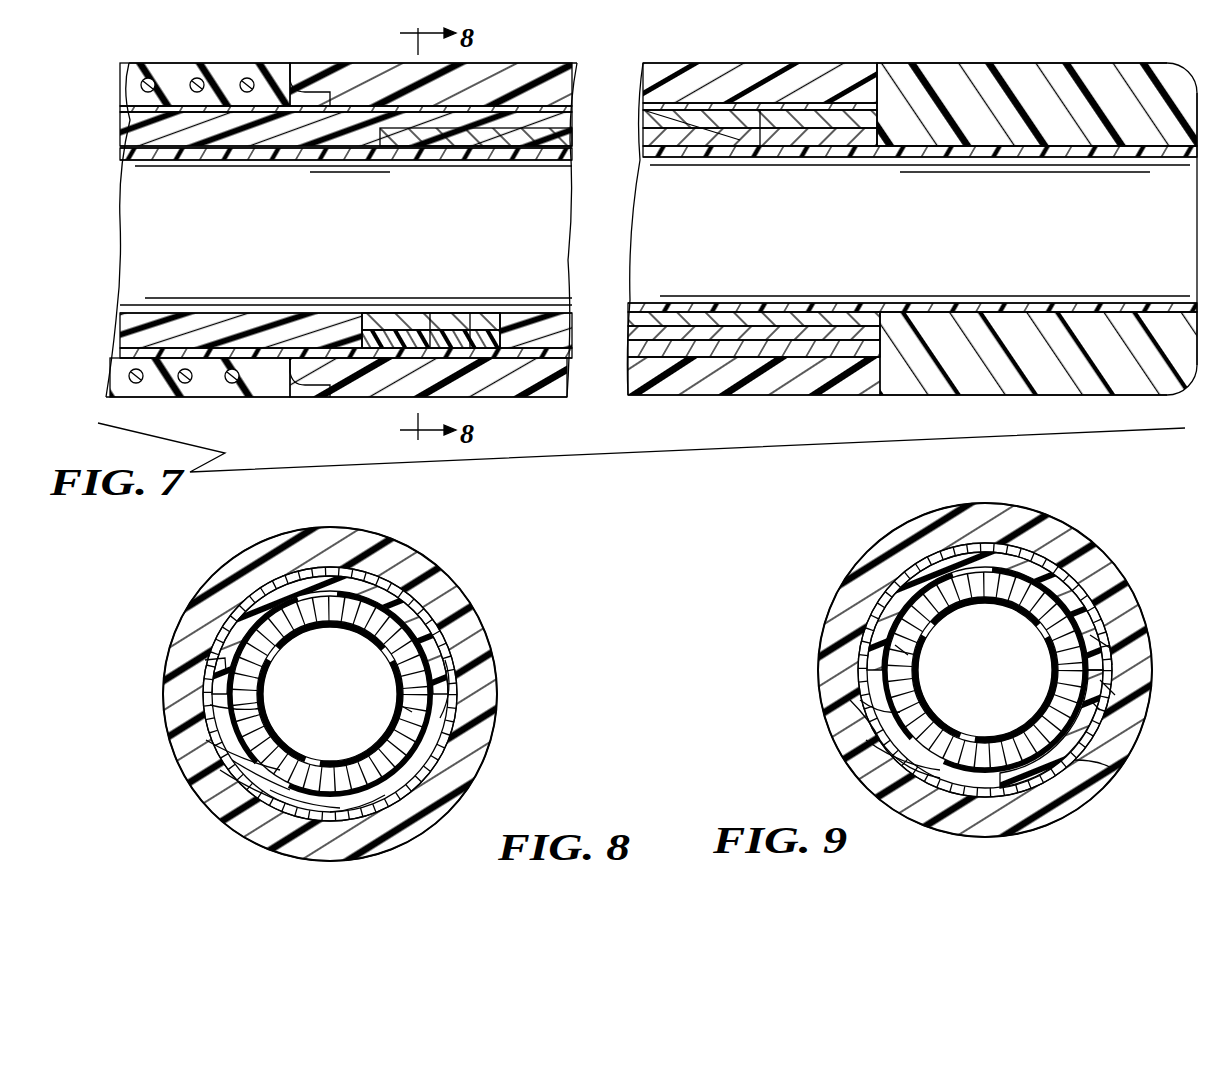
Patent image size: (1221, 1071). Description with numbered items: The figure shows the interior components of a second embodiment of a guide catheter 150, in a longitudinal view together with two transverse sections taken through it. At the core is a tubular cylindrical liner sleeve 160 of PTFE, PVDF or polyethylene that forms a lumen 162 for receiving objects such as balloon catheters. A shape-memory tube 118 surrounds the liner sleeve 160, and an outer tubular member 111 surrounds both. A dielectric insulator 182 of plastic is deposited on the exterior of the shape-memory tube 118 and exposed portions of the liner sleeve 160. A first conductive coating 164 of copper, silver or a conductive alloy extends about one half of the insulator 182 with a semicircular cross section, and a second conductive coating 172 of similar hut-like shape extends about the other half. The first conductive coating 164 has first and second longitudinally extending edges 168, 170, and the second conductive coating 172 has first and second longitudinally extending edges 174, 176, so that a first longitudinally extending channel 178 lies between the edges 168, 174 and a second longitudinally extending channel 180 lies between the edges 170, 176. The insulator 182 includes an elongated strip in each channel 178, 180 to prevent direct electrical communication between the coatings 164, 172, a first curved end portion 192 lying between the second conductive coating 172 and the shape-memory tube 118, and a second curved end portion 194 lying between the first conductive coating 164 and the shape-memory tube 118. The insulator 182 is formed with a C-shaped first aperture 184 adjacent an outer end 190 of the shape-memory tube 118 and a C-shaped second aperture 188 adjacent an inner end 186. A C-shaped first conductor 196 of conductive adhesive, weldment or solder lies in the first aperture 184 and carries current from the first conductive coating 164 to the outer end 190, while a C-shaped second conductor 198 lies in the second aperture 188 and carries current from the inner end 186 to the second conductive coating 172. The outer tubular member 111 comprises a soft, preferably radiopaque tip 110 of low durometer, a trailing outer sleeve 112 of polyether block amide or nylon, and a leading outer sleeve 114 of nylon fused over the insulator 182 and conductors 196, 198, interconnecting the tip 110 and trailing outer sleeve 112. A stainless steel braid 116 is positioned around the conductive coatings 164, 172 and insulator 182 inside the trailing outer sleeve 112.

In FIG. 7, the soft tip 110 is at (1125, 72).
In FIG. 7, the tubular member 111 is at (1022, 62).
In FIG. 8, the tubular member 111 is at (498, 748).
In FIG. 9, the tubular member 111 is at (824, 612).
In FIG. 7, the trailing outer sleeve 112 is at (243, 70).
In FIG. 7, the leading outer sleeve 114 is at (539, 72).
In FIG. 7, the stainless steel braid 116 is at (197, 78).
In FIG. 7, the shape-memory tube 118 is at (775, 118).
In FIG. 8, the shape-memory tube 118 is at (422, 642).
In FIG. 9, the shape-memory tube 118 is at (1082, 580).
In FIG. 7, the guide catheter 150 is at (892, 63).
In FIG. 8, the guide catheter 150 is at (495, 768).
In FIG. 9, the guide catheter 150 is at (822, 663).
In FIG. 7, the liner sleeve 160 is at (1011, 300).
In FIG. 8, the liner sleeve 160 is at (330, 694).
In FIG. 9, the liner sleeve 160 is at (1040, 720).
In FIG. 8, the lumen 162 is at (278, 656).
In FIG. 9, the lumen 162 is at (968, 602).
In FIG. 7, the first conductive coating 164 is at (355, 105).
In FIG. 8, the first conductive coating 164 is at (245, 605).
In FIG. 9, the first conductive coating 164 is at (1080, 588).
In FIG. 8, the first longitudinally extending edge 168 is at (208, 663).
In FIG. 9, the first longitudinally extending edge 168 is at (908, 652).
In FIG. 8, the second longitudinally extending edge 170 is at (480, 670).
In FIG. 9, the second longitudinally extending edge 170 is at (1112, 648).
In FIG. 7, the second conductive coating 172 is at (354, 358).
In FIG. 8, the second conductive coating 172 is at (362, 810).
In FIG. 9, the second conductive coating 172 is at (1110, 768).
In FIG. 8, the first longitudinally extending edge 174 is at (260, 710).
In FIG. 9, the first longitudinally extending edge 174 is at (867, 710).
In FIG. 8, the second longitudinally extending edge 176 is at (405, 700).
In FIG. 9, the second longitudinally extending edge 176 is at (1092, 703).
In FIG. 9, the first longitudinally extending channel 178 is at (858, 722).
In FIG. 9, the second longitudinally extending channel 180 is at (1117, 692).
In FIG. 7, the insulator 182 is at (244, 128).
In FIG. 8, the insulator 182 is at (392, 598).
In FIG. 9, the insulator 182 is at (1075, 735).
In FIG. 7, the first aperture 184 is at (740, 118).
In FIG. 7, the inner end 186 is at (412, 318).
In FIG. 7, the second aperture 188 is at (482, 340).
In FIG. 7, the outer end 190 is at (858, 128).
In FIG. 7, the first curved end portion 192 is at (836, 330).
In FIG. 9, the first curved end portion 192 is at (913, 753).
In FIG. 7, the second curved end portion 194 is at (468, 118).
In FIG. 8, the second curved end portion 194 is at (228, 648).
In FIG. 7, the first conductor 196 is at (838, 128).
In FIG. 9, the first conductor 196 is at (1024, 572).
In FIG. 7, the second conductor 198 is at (444, 333).
In FIG. 8, the second conductor 198 is at (230, 772).